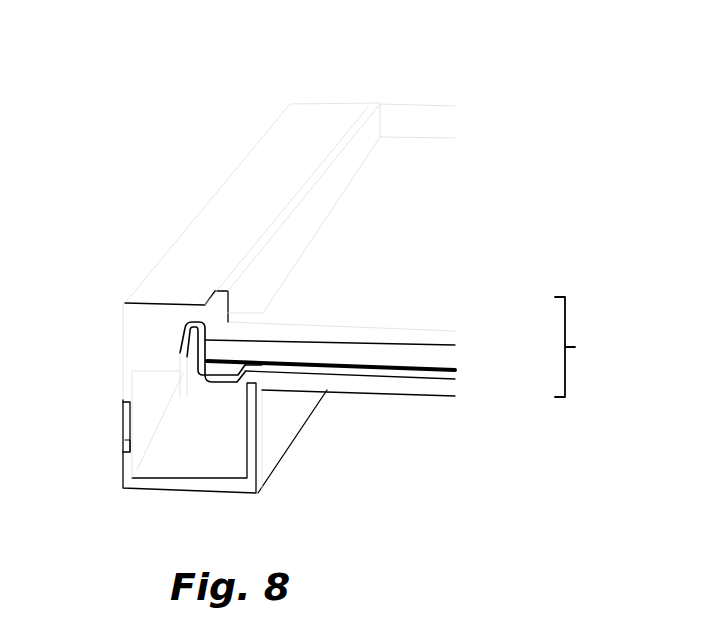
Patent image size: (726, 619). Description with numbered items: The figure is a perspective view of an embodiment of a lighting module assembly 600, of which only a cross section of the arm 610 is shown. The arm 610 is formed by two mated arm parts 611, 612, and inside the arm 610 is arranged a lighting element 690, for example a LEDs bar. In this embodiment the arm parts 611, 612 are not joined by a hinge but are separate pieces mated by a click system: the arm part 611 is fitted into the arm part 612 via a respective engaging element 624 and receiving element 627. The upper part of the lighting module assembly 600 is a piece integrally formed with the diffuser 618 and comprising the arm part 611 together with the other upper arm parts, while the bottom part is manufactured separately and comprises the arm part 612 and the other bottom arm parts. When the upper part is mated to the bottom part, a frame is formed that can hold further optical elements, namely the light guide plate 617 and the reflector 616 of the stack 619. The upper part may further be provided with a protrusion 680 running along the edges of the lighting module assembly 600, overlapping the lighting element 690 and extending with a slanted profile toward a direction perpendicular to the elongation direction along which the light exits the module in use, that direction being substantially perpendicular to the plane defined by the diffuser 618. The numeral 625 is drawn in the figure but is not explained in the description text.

The lighting module assembly 600 is at (538, 153).
The arm 610 is at (207, 455).
The arm part 611 is at (133, 332).
The arm part 612 is at (277, 455).
The reflector 616 is at (447, 373).
The light guide plate 617 is at (450, 358).
The diffuser 618 is at (457, 340).
The stack 619 is at (591, 347).
The engaging element 624 is at (128, 450).
The lower plate 625 is at (325, 382).
The receiving element 627 is at (123, 438).
The protrusion 680 is at (372, 106).
The lighting element 690 is at (205, 363).